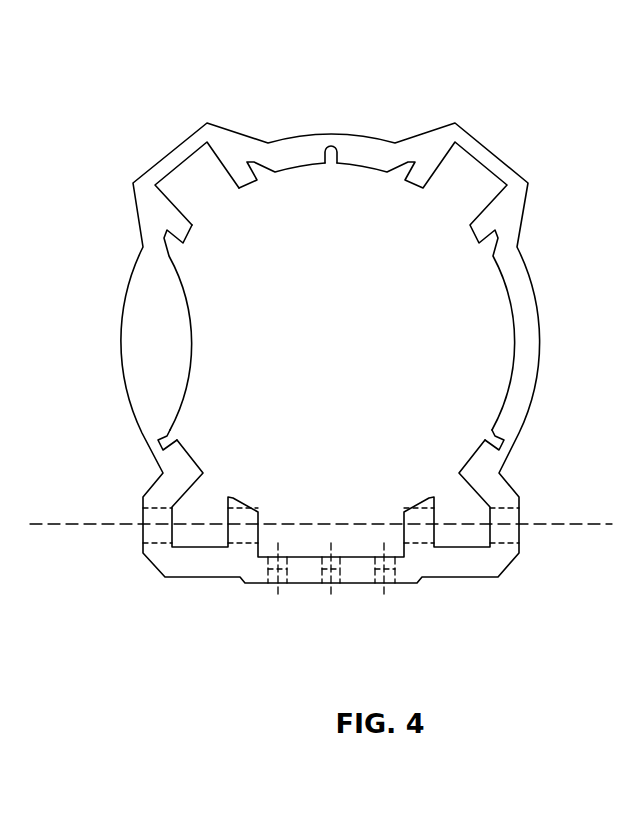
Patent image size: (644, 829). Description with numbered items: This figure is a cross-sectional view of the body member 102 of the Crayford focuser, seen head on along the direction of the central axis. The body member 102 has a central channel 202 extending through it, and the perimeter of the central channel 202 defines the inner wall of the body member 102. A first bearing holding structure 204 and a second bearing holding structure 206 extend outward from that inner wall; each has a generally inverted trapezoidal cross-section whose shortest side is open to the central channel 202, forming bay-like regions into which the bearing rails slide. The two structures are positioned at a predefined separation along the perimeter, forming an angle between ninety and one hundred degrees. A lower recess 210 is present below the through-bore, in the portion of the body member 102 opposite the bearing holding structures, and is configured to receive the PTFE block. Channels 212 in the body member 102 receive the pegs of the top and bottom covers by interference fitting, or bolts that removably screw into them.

The body member 102 is at (513, 129).
The central channel 202 is at (311, 355).
The first bearing holding structure 204 is at (183, 182).
The second bearing holding structure 206 is at (306, 559).
The lower recess 210 is at (355, 540).
The channels 212 is at (327, 147).